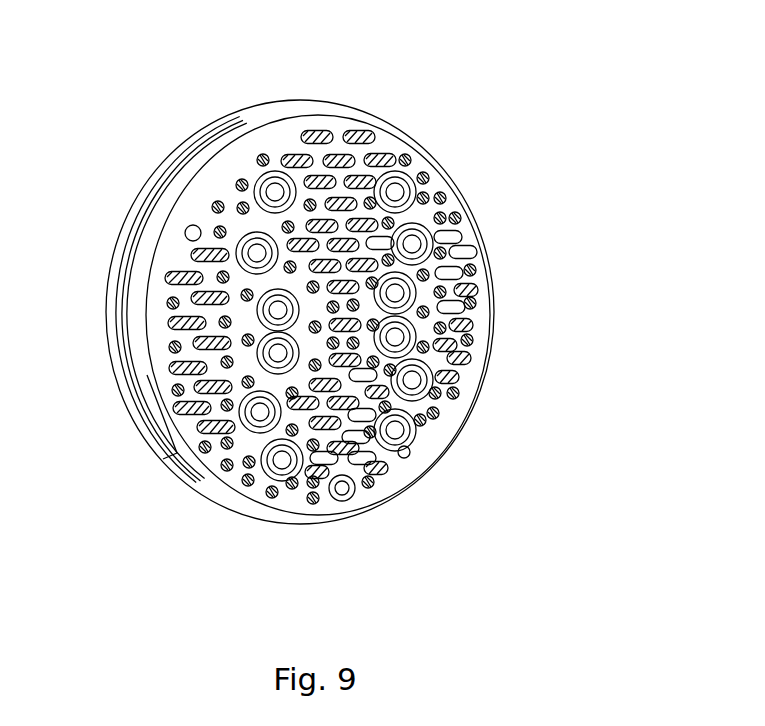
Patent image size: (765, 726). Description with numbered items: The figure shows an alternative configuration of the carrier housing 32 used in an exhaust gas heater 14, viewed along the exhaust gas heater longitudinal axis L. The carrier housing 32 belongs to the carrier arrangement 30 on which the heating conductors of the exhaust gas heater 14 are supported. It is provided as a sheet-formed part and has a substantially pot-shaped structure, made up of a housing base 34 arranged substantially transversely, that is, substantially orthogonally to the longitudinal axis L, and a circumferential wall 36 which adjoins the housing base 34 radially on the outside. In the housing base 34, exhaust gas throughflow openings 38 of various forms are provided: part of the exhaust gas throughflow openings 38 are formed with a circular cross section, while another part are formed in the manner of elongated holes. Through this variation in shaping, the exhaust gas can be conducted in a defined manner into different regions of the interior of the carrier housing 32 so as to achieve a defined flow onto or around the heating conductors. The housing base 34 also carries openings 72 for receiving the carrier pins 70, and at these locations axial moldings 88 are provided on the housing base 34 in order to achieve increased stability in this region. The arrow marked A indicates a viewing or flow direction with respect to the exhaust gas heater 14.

The exhaust gas heater 14 is at (505, 133).
The carrier arrangement 30 is at (390, 117).
The carrier housing 32 is at (147, 375).
The housing base 34 is at (218, 183).
The circumferential wall 36 is at (112, 298).
The exhaust gas throughflow openings 38 is at (467, 255).
The carrier pins 70 is at (393, 433).
The openings 72 is at (282, 470).
The axial moldings 88 is at (405, 444).
The exhaust gas heater longitudinal axis L is at (473, 380).
The direction arrow A is at (543, 408).